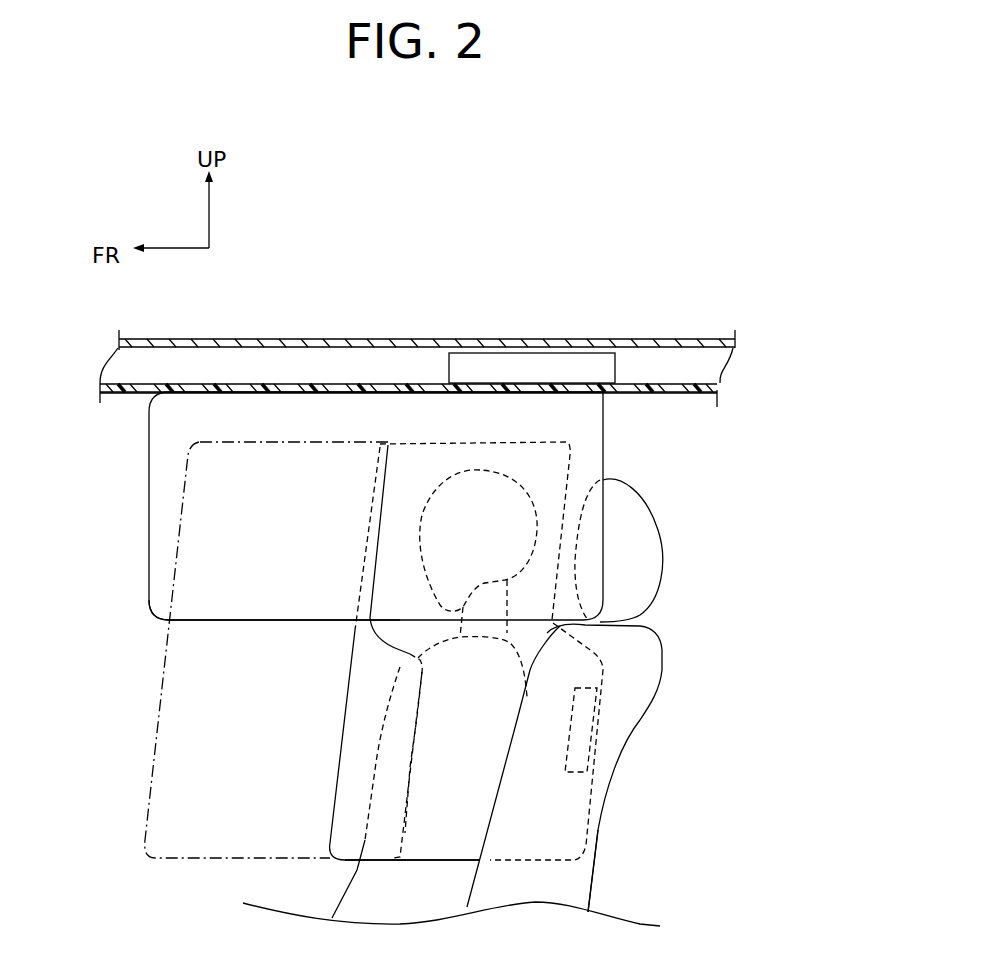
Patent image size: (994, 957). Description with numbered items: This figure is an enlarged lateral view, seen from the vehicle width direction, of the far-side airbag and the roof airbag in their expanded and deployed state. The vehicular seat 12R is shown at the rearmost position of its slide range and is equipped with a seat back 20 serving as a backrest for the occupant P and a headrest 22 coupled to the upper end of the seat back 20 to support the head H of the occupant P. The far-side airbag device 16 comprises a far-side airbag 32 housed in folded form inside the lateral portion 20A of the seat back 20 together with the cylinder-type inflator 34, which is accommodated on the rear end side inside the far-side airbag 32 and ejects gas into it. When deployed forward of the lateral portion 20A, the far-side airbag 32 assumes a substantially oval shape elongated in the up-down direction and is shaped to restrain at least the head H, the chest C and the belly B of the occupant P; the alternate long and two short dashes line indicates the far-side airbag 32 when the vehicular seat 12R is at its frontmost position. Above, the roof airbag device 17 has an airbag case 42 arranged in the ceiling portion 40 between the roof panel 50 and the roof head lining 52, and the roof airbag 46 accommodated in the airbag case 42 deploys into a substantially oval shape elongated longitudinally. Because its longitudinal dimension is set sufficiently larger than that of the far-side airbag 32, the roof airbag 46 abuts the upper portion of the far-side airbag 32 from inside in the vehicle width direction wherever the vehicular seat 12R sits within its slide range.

The ceiling portion 40 is at (338, 330).
The airbag case 42 is at (523, 352).
The roof panel 50 is at (700, 338).
The roof head lining 52 is at (673, 393).
The roof airbag device 17 is at (138, 508).
The roof airbag 46 is at (148, 572).
The headrest 22 is at (663, 567).
The seat back 20 is at (660, 667).
The vehicular seat 12R is at (630, 767).
The lateral portion 20A is at (593, 875).
The inflator 34 is at (592, 727).
The far-side airbag device 16 is at (310, 775).
The far-side airbag 32 is at (157, 736).
The head H is at (420, 548).
The occupant P is at (395, 671).
The chest C is at (393, 708).
The belly B is at (363, 828).